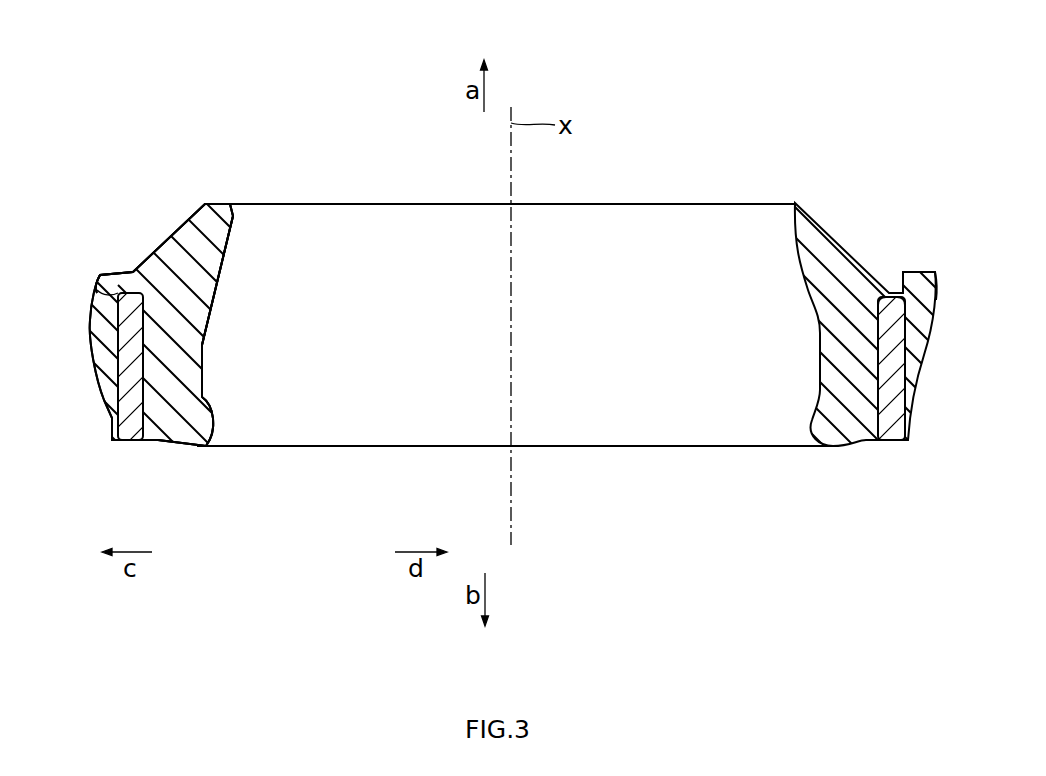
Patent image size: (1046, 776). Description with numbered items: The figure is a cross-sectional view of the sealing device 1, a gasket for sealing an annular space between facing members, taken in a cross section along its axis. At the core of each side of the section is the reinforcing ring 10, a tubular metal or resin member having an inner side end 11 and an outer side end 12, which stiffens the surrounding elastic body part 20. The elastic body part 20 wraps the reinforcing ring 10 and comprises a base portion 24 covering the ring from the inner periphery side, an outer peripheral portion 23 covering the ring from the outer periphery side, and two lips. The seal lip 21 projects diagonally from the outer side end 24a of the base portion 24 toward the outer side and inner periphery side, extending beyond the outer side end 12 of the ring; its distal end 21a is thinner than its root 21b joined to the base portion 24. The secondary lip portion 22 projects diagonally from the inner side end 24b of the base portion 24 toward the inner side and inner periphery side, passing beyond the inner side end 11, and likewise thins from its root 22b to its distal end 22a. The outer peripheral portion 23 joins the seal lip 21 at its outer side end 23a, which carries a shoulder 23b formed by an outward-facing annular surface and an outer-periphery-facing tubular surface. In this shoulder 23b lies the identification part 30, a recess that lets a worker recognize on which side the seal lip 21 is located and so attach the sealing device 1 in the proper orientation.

The sealing device 1 is at (700, 126).
The reinforcing ring 10 is at (145, 400).
The inner side end 11 is at (895, 441).
The outer side end 12 is at (892, 296).
The elastic body part 20 is at (238, 337).
The seal lip 21 is at (237, 225).
The distal end 21a is at (228, 212).
The root 21b is at (180, 270).
The secondary lip portion 22 is at (215, 432).
The distal end 22a is at (208, 440).
The root 22b is at (187, 443).
The outer peripheral portion 23 is at (90, 388).
The outer side end 23a is at (97, 290).
The shoulder 23b is at (131, 270).
The base portion 24 is at (183, 342).
The outer side end 24a is at (177, 300).
The inner side end 24b is at (203, 398).
The identification part 30 is at (108, 273).